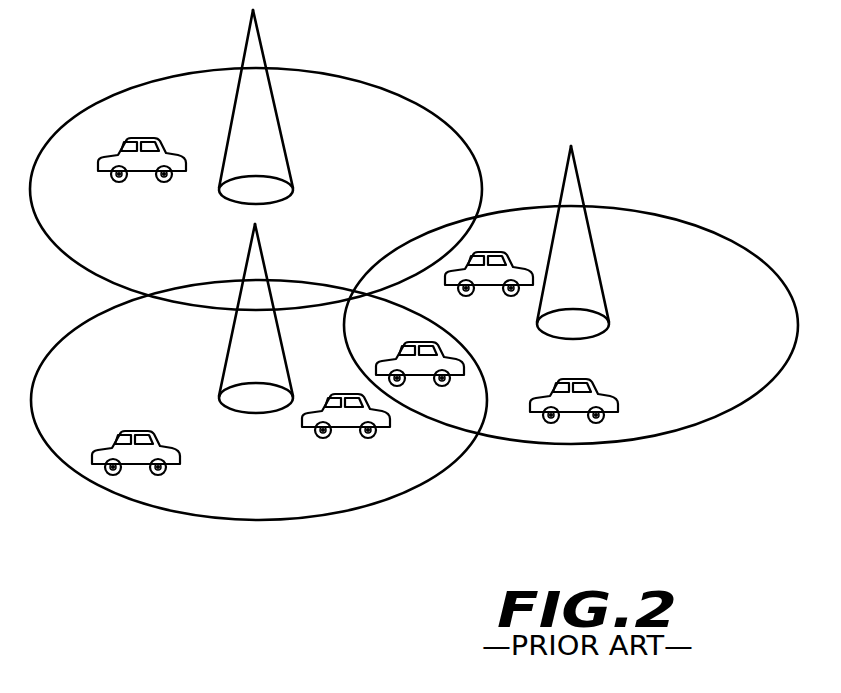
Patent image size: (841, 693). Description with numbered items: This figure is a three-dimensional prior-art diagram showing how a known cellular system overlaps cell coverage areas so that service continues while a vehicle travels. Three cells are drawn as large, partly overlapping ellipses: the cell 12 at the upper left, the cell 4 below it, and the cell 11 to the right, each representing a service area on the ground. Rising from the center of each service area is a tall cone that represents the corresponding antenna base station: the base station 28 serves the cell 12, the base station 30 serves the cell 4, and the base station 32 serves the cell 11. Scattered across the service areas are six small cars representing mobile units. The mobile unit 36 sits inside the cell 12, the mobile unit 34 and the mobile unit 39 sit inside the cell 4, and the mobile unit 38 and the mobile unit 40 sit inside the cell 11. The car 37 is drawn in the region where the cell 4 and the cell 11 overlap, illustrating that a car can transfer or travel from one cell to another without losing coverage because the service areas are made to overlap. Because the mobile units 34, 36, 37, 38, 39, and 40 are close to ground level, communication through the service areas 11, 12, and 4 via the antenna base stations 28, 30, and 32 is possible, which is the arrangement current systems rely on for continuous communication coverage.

The cell 4 is at (270, 504).
The cell 11 is at (737, 341).
The cell 12 is at (391, 190).
The antenna base station 28 is at (265, 50).
The antenna base station 30 is at (243, 263).
The antenna base station 32 is at (582, 185).
The mobile unit 34 is at (122, 432).
The mobile unit 36 is at (177, 156).
The car 37 is at (408, 342).
The mobile unit 38 is at (493, 287).
The mobile unit 39 is at (347, 428).
The mobile unit 40 is at (600, 393).